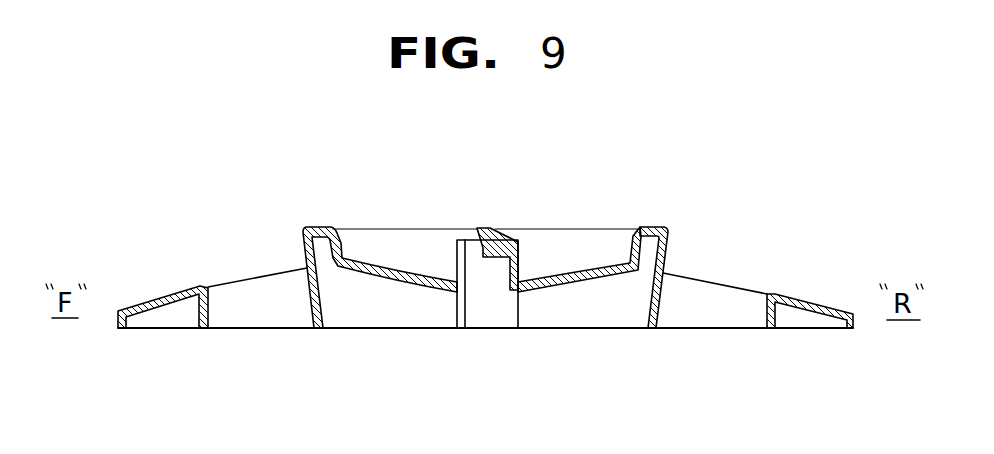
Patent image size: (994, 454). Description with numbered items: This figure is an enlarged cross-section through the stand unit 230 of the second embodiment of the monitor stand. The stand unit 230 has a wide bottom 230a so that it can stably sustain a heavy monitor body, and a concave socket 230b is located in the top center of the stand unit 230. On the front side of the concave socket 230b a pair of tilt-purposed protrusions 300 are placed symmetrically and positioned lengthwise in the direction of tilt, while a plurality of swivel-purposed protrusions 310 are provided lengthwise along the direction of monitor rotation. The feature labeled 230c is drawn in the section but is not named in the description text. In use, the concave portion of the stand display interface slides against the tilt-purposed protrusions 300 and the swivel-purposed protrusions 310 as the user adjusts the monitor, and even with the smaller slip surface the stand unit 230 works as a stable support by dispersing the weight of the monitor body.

The stand unit 230 is at (729, 253).
The wide bottom 230a is at (797, 293).
The concave socket 230b is at (633, 232).
The engaging projection 230c is at (513, 228).
The tilt-purposed protrusions 300 is at (316, 225).
The swivel-purposed protrusions 310 is at (644, 228).